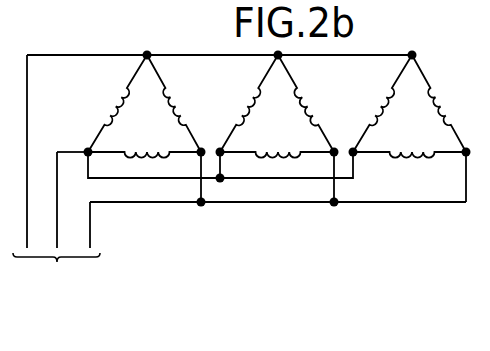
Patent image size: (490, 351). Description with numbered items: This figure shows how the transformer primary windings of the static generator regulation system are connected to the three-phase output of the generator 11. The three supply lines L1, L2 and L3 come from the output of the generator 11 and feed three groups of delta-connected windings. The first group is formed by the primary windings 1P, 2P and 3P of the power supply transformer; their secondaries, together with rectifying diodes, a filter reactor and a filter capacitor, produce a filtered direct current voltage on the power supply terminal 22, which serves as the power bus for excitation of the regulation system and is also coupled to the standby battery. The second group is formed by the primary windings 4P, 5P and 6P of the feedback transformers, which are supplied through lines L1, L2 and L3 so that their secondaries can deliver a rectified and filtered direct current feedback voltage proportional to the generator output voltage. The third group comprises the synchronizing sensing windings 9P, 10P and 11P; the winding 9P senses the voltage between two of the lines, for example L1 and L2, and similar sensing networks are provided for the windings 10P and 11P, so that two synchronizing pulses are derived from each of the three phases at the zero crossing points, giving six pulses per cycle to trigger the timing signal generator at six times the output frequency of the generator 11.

The primary winding 1P is at (107, 110).
The primary winding 2P is at (188, 117).
The primary winding 3P is at (165, 145).
The primary winding 4P is at (233, 107).
The primary winding 5P is at (318, 112).
The primary winding 6P is at (297, 145).
The transformer winding 9P is at (372, 115).
The sensing winding 10P is at (453, 115).
The sensing winding 11P is at (430, 150).
The supply line L1 is at (27, 212).
The supply line L2 is at (57, 212).
The supply line L3 is at (90, 212).
The power supply terminal 22 is at (478, 168).
The generator 11 is at (132, 276).